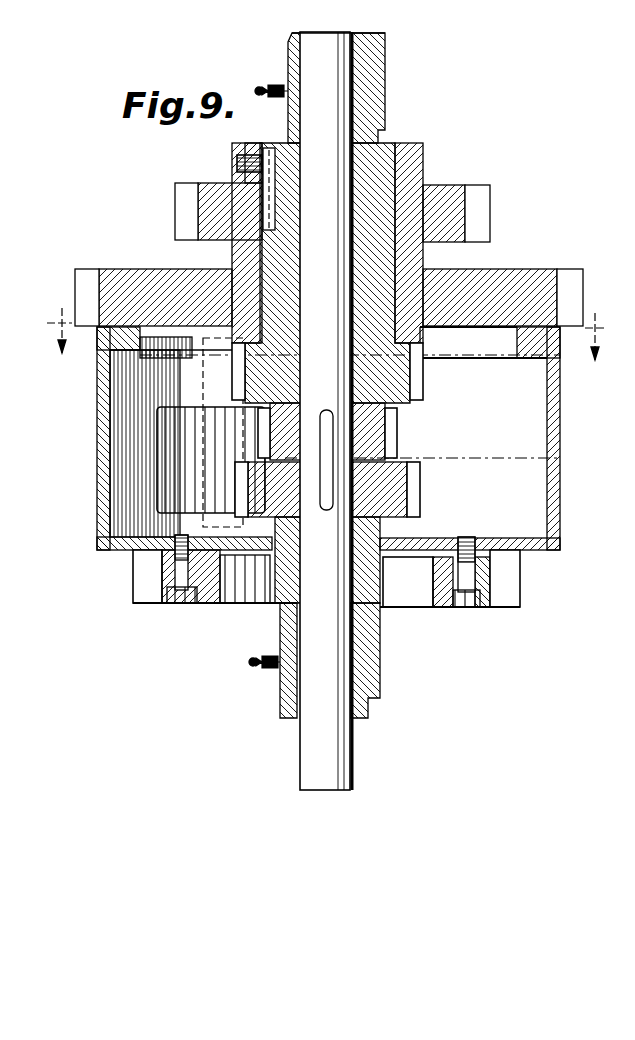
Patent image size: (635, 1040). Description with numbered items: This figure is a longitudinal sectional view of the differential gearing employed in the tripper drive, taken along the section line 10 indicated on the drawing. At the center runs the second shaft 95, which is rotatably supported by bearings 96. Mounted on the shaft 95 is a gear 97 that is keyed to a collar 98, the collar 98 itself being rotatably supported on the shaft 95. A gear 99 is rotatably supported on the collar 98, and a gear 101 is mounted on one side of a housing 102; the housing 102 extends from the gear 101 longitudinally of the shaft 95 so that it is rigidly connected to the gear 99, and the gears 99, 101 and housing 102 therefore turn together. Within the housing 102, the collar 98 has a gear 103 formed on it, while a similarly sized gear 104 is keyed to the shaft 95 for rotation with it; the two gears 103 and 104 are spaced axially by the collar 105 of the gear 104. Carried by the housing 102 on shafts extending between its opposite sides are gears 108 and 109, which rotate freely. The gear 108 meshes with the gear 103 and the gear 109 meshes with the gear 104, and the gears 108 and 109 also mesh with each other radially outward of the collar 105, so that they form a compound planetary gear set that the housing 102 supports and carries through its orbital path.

The section line 10- 10 is at (333, 325).
The second shaft 95 is at (345, 742).
The bearings 96 is at (378, 100).
The gear 97 is at (438, 193).
The collar 98 is at (383, 167).
The gear 99 is at (502, 273).
The gear 101 is at (508, 595).
The housing 102 is at (560, 446).
The gear 103 is at (420, 368).
The gear 104 is at (413, 478).
The collar 105 is at (372, 421).
The gear 108 is at (390, 445).
The gear 109 is at (177, 465).